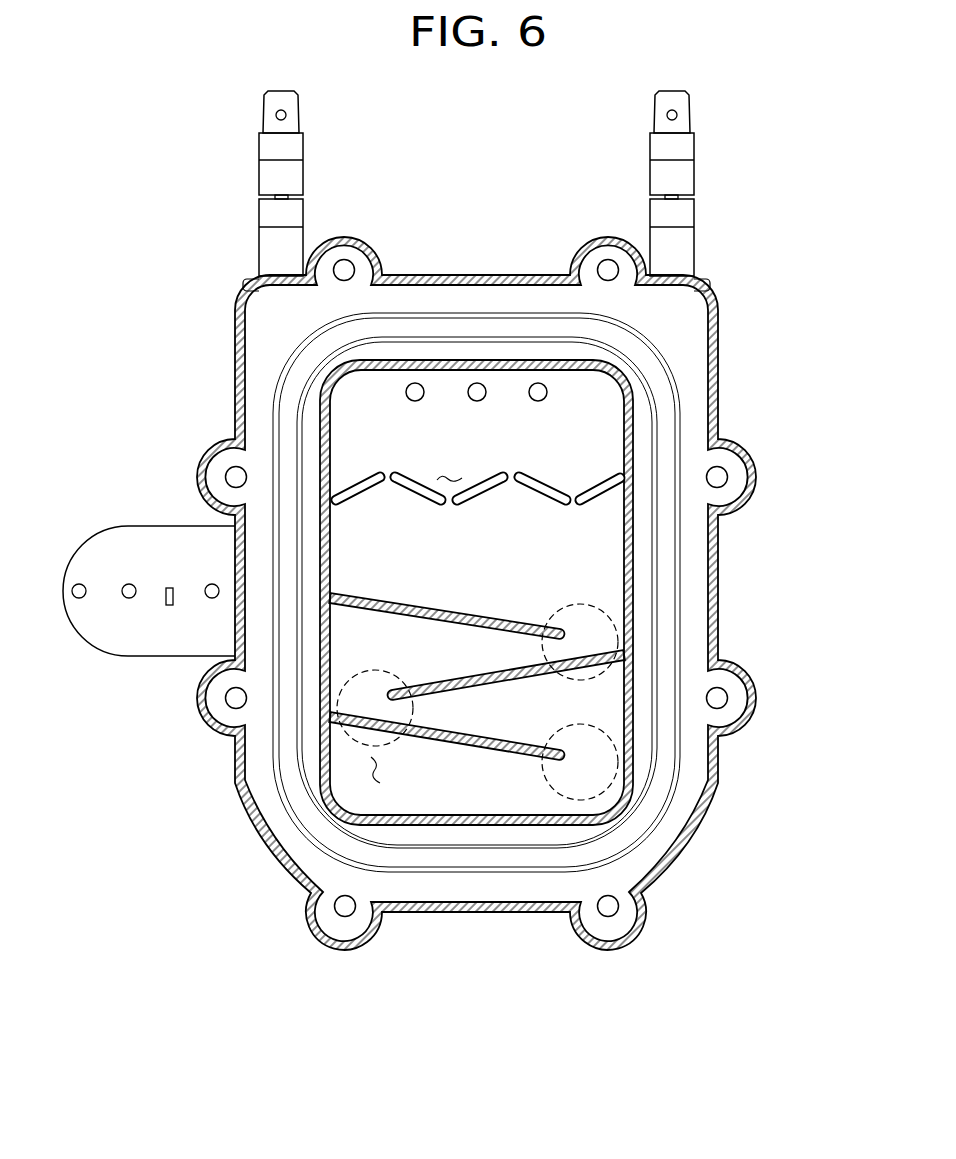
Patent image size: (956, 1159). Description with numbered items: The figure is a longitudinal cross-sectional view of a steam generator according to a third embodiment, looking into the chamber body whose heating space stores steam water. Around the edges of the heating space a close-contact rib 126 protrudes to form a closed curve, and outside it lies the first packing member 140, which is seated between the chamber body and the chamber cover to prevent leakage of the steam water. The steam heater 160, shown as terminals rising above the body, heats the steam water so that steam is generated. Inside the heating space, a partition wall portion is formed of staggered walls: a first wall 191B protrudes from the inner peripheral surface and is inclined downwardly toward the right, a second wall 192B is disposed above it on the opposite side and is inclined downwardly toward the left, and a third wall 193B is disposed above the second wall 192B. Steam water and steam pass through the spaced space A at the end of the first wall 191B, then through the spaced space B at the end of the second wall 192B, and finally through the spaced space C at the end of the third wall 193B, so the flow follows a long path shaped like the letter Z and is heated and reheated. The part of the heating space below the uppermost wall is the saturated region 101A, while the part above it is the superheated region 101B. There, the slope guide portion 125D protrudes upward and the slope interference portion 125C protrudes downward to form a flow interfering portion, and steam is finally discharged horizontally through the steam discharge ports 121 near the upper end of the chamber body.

The steam heater 160 is at (270, 240).
The superheated region 101B is at (449, 476).
The slope guide portion 125D is at (485, 489).
The steam discharge port 121 is at (411, 389).
The slope interference portion 125C is at (540, 487).
The spaced space C is at (590, 606).
The third wall 193B is at (563, 621).
The spaced space B is at (396, 691).
The close-contact rib 126 is at (635, 765).
The first packing member 140 is at (657, 808).
The saturated region 101A is at (375, 772).
The second wall 192B is at (448, 686).
The first wall 191B is at (497, 748).
The spaced space A is at (578, 800).